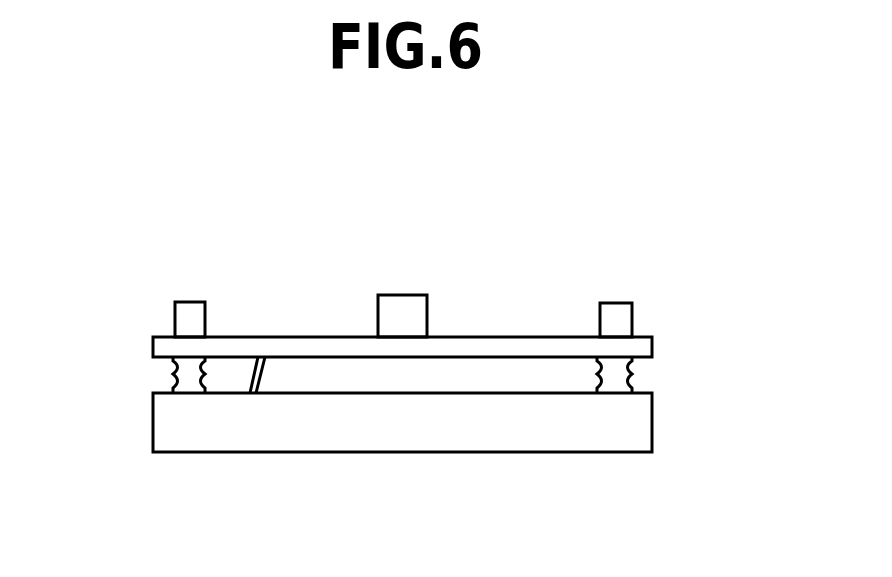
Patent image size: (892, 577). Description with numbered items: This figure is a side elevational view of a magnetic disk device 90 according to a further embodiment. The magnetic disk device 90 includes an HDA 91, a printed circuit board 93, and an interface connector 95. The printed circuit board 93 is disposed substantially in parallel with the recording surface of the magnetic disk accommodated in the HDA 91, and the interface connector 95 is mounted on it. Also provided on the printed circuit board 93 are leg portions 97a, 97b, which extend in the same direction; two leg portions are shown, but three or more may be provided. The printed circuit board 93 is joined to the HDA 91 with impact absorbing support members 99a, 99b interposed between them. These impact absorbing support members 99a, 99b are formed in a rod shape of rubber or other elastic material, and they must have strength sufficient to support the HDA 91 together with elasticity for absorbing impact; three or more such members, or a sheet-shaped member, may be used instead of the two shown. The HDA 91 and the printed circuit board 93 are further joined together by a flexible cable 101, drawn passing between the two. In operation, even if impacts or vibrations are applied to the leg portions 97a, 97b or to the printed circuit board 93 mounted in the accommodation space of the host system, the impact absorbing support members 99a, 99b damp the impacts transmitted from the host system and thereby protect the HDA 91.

The magnetic disk device 90 is at (680, 384).
The HDA 91 is at (567, 432).
The printed circuit board 93 is at (505, 337).
The interface connector 95 is at (402, 308).
The leg portion 97a is at (612, 310).
The leg portion 97b is at (190, 318).
The impact absorbing support member 99a is at (633, 381).
The impact absorbing support member 99b is at (172, 378).
The flexible cable 101 is at (256, 368).